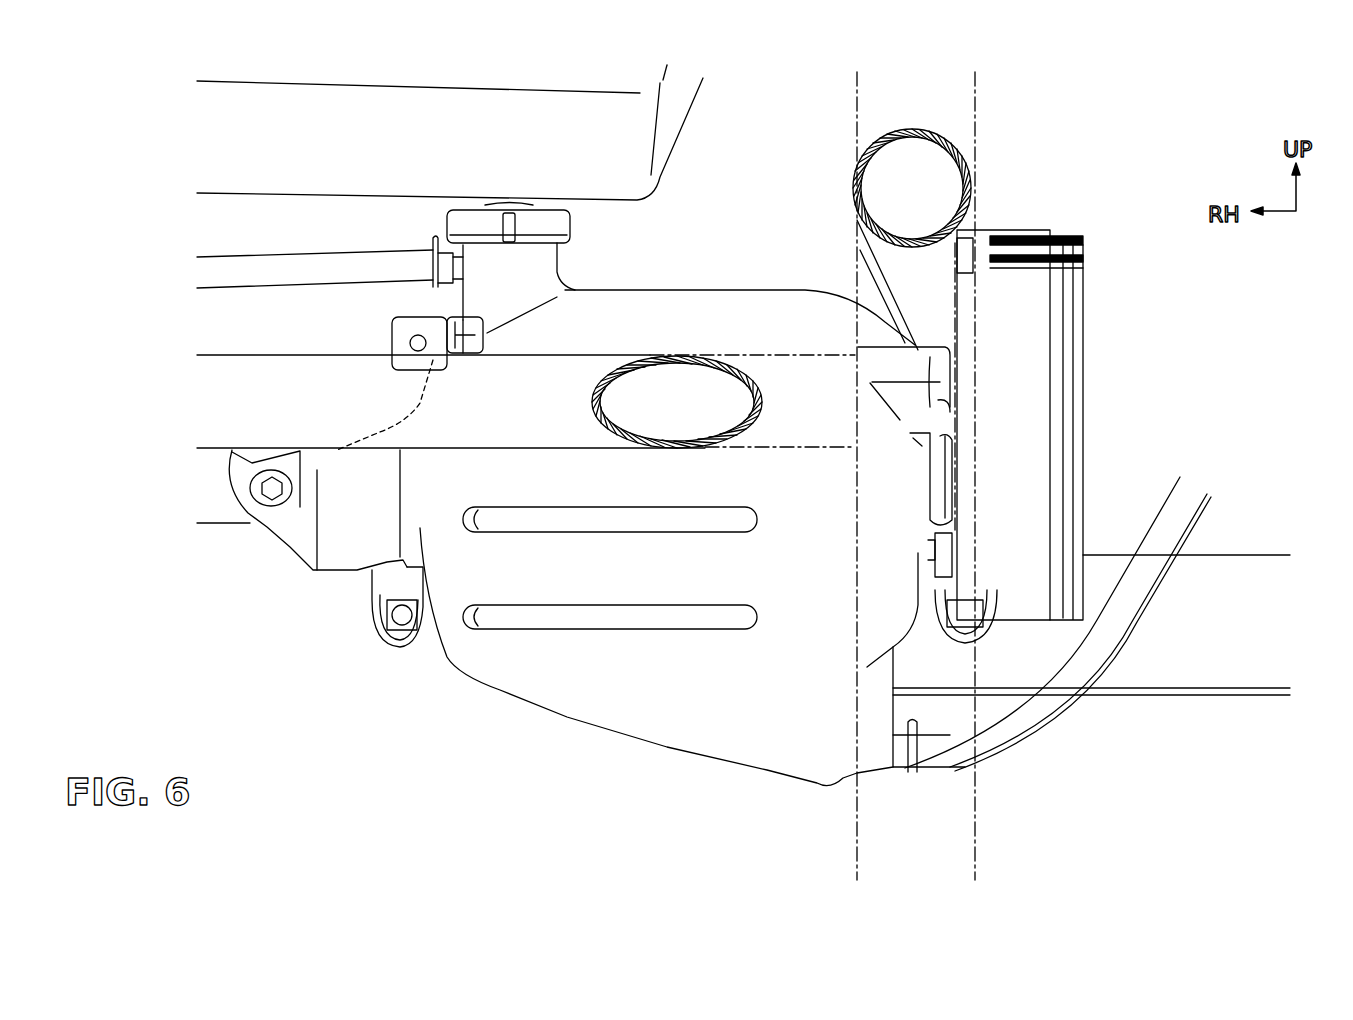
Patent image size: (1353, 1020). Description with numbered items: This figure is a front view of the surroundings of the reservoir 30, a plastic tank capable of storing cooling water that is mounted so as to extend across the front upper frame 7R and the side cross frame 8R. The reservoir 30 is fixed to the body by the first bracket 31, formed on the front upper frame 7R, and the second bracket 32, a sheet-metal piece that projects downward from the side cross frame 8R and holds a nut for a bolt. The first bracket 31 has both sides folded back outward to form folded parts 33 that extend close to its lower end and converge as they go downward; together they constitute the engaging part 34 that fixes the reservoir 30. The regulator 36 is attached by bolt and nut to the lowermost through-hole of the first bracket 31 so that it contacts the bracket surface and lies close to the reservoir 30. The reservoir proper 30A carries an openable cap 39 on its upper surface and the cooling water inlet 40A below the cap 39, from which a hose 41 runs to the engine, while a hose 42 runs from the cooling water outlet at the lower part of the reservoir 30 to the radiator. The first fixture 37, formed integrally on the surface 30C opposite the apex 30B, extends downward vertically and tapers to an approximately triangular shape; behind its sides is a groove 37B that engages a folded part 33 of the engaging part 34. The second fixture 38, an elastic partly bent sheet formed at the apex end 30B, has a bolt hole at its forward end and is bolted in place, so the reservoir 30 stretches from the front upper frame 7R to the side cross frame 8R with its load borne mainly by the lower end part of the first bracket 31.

The front upper frame 7R is at (960, 105).
The side cross frame 8R is at (307, 370).
The reservoir 30 is at (722, 323).
The reservoir proper 30A is at (663, 323).
The apex (end of the downward-extending part) 30B is at (420, 528).
The surface opposite to the apex 30C is at (883, 705).
The first bracket 31 is at (940, 458).
The second bracket 32 is at (252, 463).
The folded part 33 is at (933, 505).
The engaging part 34 is at (918, 527).
The regulator 36 is at (1083, 311).
The first fixture 37 is at (870, 318).
The groove 37B is at (925, 473).
The second fixture 38 is at (350, 550).
The cap 39 is at (540, 220).
The cooling water inlet 40A is at (462, 262).
The hose 41 is at (333, 267).
The hose 42 is at (1135, 594).